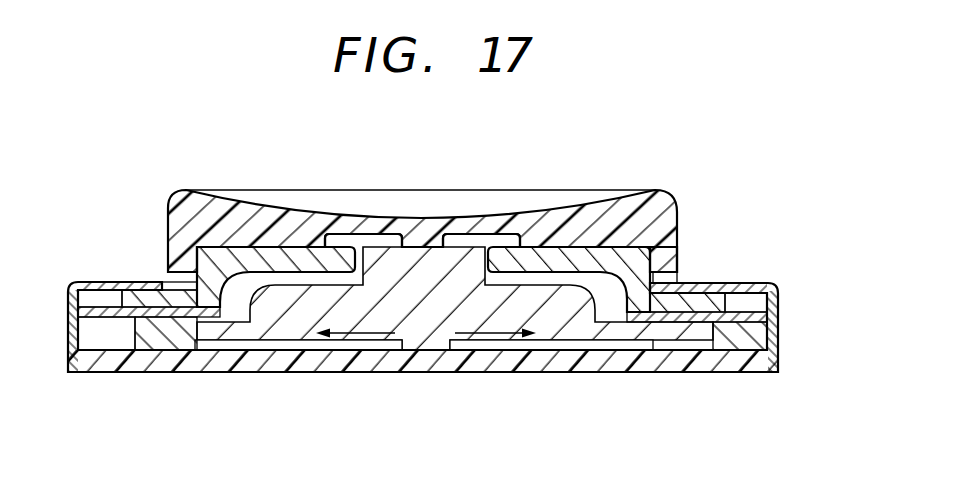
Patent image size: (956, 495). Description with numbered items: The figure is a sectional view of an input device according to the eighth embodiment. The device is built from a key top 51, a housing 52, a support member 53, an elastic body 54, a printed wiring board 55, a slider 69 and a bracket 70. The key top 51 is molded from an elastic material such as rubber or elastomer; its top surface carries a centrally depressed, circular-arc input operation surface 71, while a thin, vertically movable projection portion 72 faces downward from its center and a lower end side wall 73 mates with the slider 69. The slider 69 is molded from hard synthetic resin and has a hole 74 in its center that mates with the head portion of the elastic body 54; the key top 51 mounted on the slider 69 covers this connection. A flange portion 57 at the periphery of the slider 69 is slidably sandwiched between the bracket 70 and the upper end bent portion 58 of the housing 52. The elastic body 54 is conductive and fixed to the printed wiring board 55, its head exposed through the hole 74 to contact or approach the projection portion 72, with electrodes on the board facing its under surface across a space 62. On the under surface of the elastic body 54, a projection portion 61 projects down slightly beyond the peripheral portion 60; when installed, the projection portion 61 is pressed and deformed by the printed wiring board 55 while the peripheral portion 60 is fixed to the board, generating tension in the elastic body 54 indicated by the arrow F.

The key top 51 is at (659, 210).
The housing 52 is at (778, 295).
The support member 53 is at (770, 343).
The elastic body 54 is at (493, 340).
The printed wiring board 55 is at (735, 373).
The flange portion 57 is at (142, 300).
The upper end bent portion 58 is at (97, 287).
The peripheral portion 60 is at (675, 340).
The projection portion 61 is at (433, 340).
The space 62 is at (565, 345).
The slider 69 is at (563, 260).
The bracket 70 is at (757, 316).
The input operation surface 71 is at (293, 208).
The projection portion 72 is at (423, 240).
The lower end side wall 73 is at (672, 247).
The hole 74 is at (482, 247).
The arrow F (tension) F is at (372, 343).